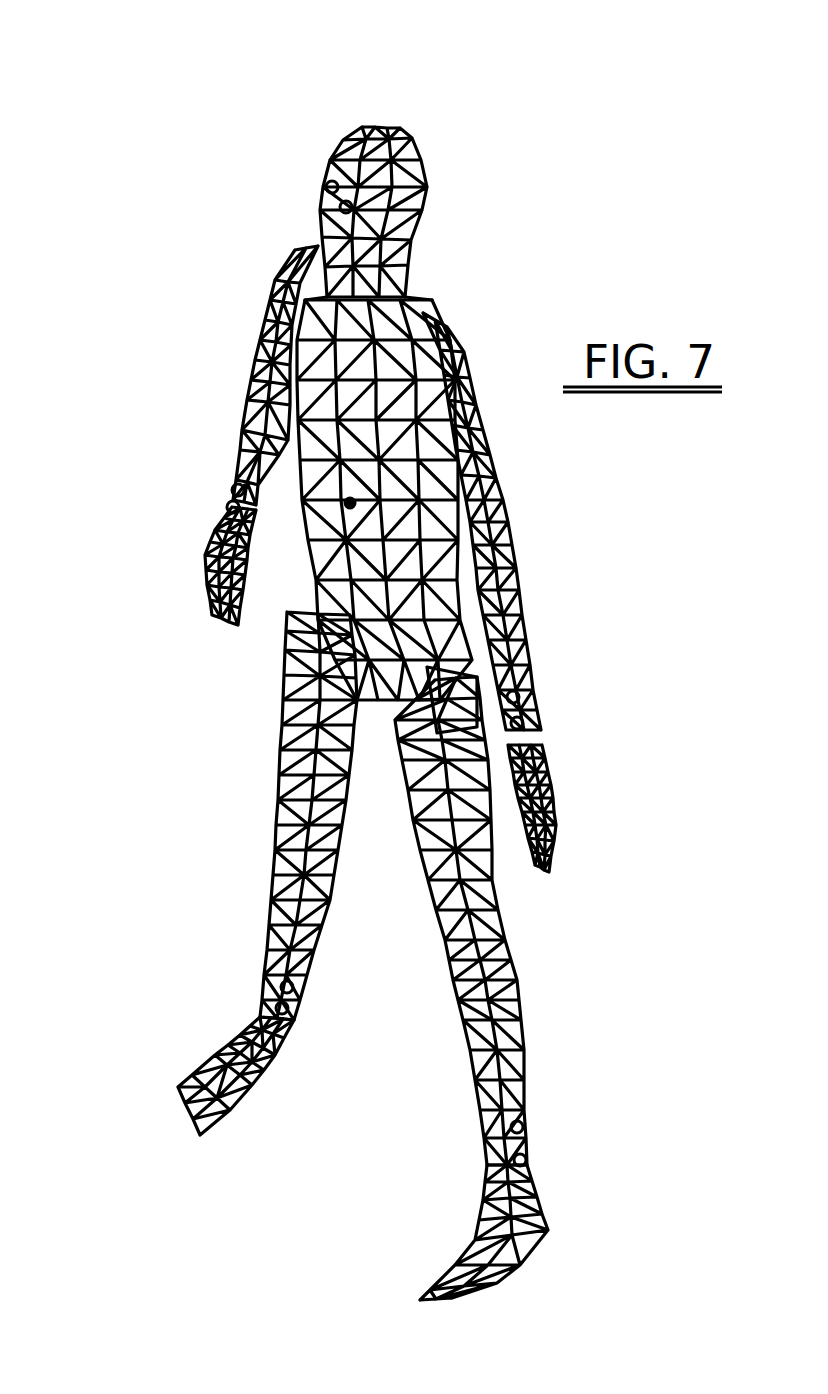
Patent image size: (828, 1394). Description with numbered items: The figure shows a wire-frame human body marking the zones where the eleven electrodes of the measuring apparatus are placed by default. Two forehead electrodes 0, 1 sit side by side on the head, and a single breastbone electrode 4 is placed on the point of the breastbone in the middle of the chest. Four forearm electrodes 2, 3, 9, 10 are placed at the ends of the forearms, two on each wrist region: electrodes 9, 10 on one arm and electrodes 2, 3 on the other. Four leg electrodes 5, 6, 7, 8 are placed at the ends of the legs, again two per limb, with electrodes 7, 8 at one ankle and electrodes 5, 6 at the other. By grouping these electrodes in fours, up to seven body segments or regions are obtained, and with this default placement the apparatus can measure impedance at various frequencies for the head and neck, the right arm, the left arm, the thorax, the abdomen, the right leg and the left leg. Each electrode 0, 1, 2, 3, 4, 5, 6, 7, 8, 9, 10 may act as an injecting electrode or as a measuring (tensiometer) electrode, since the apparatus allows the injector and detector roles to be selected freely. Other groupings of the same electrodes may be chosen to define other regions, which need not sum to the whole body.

The forehead electrode 0 is at (328, 185).
The forehead electrode 1 is at (331, 172).
The forearm electrode 2 is at (520, 700).
The forearm electrode 3 is at (528, 740).
The breastbone electrode 4 is at (344, 507).
The leg electrode 5 is at (525, 1127).
The leg electrode 6 is at (524, 1163).
The leg electrode 7 is at (275, 1012).
The leg electrode 8 is at (280, 988).
The forearm electrode 9 is at (228, 508).
The forearm electrode 10 is at (232, 490).